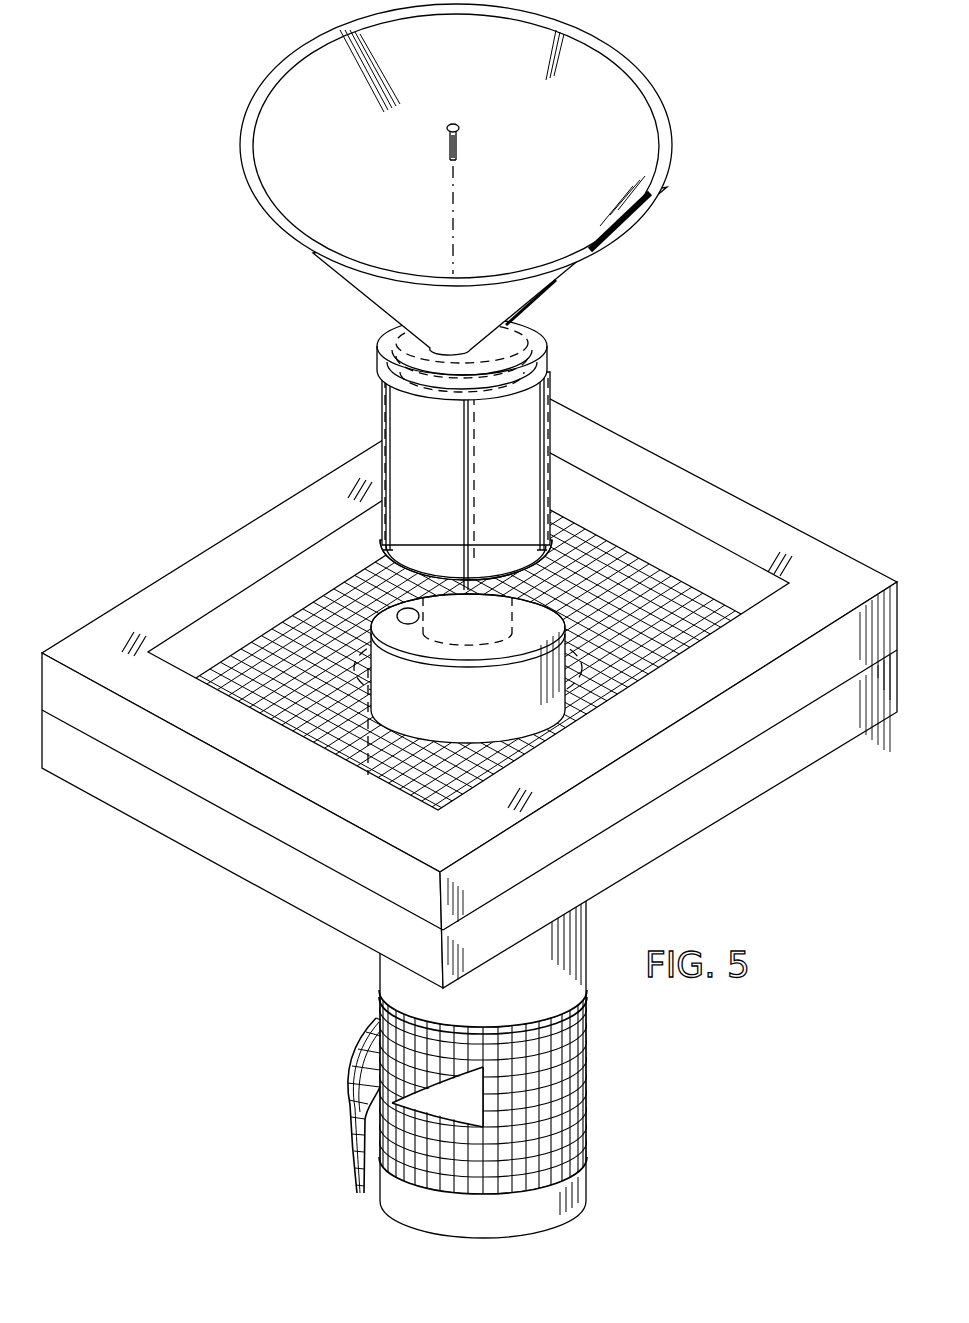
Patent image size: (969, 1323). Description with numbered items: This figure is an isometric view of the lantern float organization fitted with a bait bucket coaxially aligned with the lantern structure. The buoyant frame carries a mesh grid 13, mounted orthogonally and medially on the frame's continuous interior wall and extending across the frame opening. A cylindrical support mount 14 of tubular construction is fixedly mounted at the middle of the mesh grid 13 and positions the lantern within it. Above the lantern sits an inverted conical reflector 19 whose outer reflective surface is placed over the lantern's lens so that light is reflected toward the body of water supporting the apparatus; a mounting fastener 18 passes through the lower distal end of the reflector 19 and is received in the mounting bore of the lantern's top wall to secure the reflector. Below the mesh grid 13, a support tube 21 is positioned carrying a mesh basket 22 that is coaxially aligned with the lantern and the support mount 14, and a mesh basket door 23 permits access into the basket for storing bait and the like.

The mesh grid 13 is at (618, 557).
The cylindrical support mount 14 is at (527, 713).
The mounting fastener 18 is at (459, 146).
The inverted conical reflector 19 is at (635, 213).
The support tube 21 is at (586, 940).
The mesh basket 22 is at (586, 1078).
The mesh basket door 23 is at (350, 1086).